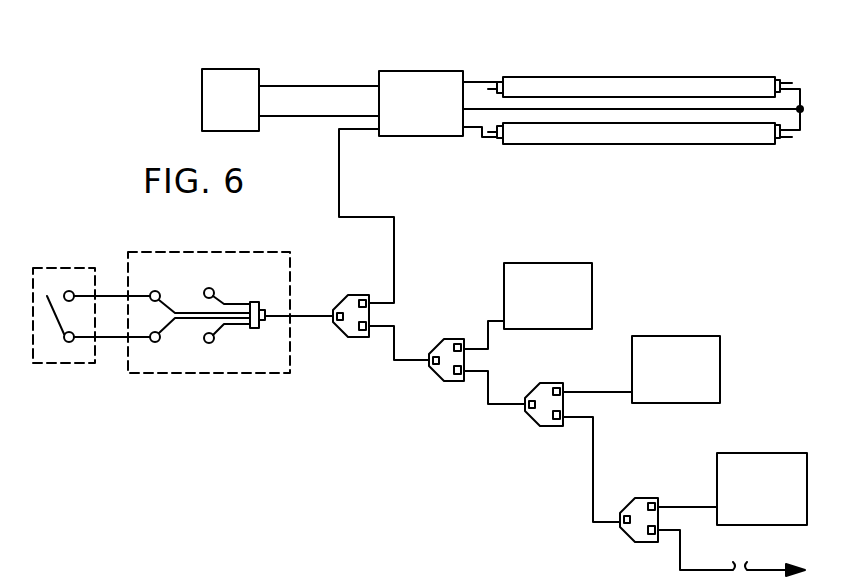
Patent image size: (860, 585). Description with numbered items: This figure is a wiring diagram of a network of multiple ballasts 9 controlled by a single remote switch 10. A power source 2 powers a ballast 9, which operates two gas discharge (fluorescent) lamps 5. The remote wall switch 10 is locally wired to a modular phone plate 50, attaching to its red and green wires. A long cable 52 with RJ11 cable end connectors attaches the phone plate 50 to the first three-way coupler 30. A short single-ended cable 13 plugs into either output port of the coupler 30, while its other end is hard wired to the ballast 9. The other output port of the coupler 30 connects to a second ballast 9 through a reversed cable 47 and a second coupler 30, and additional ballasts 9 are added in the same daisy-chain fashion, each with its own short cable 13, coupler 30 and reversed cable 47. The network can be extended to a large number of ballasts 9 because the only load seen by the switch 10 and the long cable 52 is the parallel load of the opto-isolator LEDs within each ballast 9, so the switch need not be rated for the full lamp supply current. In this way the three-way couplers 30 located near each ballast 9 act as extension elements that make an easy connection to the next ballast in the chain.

The power source 2 is at (232, 69).
The ballast 9 is at (423, 71).
The gas discharge lamps 5 is at (680, 77).
The short single-ended cable 13 is at (339, 157).
The remote switch 10 is at (47, 296).
The modular phone plate 50 is at (256, 375).
The long cable 52 is at (316, 316).
The 3-way coupler 30 is at (343, 333).
The reversed cable 47 is at (390, 360).